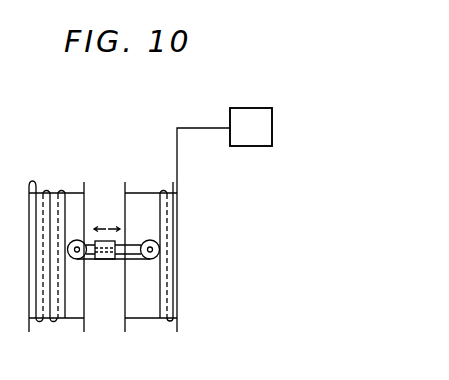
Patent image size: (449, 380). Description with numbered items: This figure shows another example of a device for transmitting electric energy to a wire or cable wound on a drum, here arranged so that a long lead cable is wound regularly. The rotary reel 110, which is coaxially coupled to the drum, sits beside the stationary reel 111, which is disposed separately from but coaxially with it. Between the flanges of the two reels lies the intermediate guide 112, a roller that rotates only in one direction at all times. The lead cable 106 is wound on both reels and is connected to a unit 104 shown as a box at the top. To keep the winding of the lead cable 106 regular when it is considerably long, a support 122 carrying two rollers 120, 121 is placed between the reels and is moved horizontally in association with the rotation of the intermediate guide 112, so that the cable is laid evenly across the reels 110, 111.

The power supply unit 104 is at (248, 118).
The lead cable 106 is at (200, 127).
The rotary reel 110 is at (42, 187).
The stationary reel 111 is at (135, 198).
The intermediate guide 112 is at (92, 240).
The roller 120 is at (73, 261).
The roller 121 is at (141, 261).
The support 122 is at (122, 261).